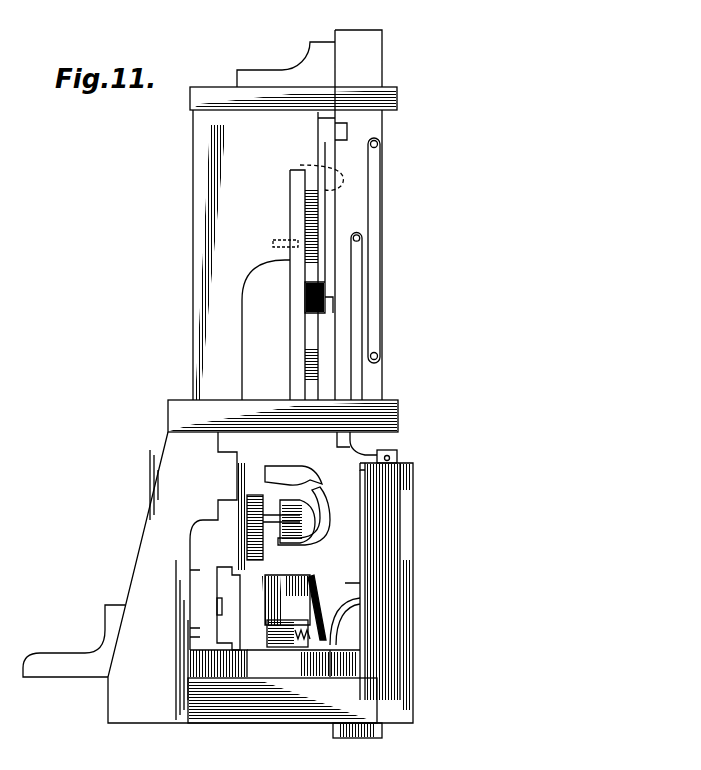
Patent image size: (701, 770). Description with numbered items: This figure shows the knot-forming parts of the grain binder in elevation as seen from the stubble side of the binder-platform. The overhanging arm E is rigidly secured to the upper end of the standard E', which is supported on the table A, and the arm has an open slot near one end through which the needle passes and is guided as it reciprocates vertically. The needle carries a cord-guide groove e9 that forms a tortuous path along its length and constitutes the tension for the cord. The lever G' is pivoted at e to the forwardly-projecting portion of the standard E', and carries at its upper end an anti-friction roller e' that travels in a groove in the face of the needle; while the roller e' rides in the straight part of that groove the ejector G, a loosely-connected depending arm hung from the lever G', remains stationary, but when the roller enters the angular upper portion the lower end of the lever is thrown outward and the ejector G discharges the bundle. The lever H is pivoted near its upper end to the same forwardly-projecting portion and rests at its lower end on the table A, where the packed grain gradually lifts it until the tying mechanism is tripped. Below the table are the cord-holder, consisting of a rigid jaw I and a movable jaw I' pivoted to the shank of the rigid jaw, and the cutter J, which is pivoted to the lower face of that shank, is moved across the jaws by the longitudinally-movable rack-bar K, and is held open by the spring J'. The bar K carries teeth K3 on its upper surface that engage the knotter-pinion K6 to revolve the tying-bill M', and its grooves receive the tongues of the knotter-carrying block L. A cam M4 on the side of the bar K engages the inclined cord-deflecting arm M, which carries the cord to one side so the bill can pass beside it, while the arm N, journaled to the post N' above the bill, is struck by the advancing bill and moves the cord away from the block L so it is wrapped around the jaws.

The overhanging arm E is at (309, 90).
The standard E' is at (206, 265).
The anti-friction roller e' is at (314, 133).
The pivot e is at (307, 167).
The groove e9 is at (378, 280).
The lever G' is at (362, 227).
The ejector G is at (366, 317).
The lever H is at (290, 181).
The table A is at (283, 416).
The arm N is at (342, 445).
The post N' is at (401, 586).
The knotter-pinion K6 is at (273, 525).
The tying-bill M' is at (309, 505).
The block L is at (211, 537).
The teeth K3 is at (268, 577).
The cord-deflecting arm M is at (325, 594).
The rigid jaw I is at (369, 585).
The movable jaw I' is at (362, 621).
The rack-bar K is at (228, 608).
The cutter J is at (229, 623).
The cam M4 is at (258, 652).
The spring J' is at (297, 645).